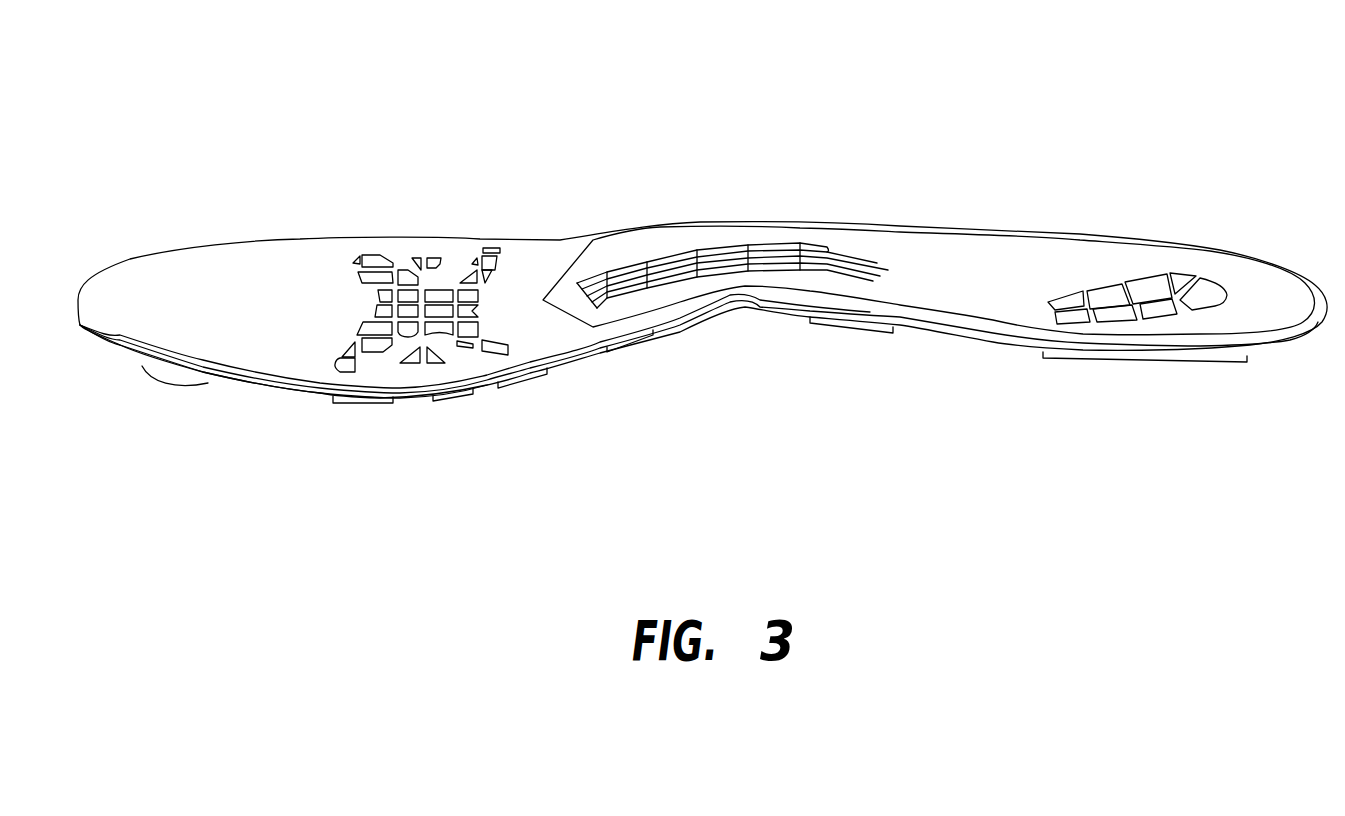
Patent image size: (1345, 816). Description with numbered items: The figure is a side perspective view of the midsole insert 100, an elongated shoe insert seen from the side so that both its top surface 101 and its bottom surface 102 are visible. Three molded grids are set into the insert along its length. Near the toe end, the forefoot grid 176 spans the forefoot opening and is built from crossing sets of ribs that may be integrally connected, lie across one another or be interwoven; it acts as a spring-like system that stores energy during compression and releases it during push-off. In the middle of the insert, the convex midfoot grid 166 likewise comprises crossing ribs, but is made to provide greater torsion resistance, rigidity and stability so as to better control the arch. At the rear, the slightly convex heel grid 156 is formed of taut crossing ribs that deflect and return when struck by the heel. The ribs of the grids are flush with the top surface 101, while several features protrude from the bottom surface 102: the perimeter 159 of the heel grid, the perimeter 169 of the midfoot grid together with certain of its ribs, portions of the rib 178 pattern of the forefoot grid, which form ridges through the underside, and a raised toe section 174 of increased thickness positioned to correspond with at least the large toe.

The midsole insert 100 is at (285, 105).
The top surface 101 is at (279, 257).
The bottom surface 102 is at (578, 358).
The forefoot grid 176 is at (422, 257).
The midfoot grid 166 is at (703, 242).
The heel grid 156 is at (1112, 277).
The perimeter of the midfoot grid 169 is at (810, 320).
The perimeter of the heel grid 159 is at (1120, 363).
The raised toe section 174 is at (187, 387).
The rib pattern 178 is at (373, 405).